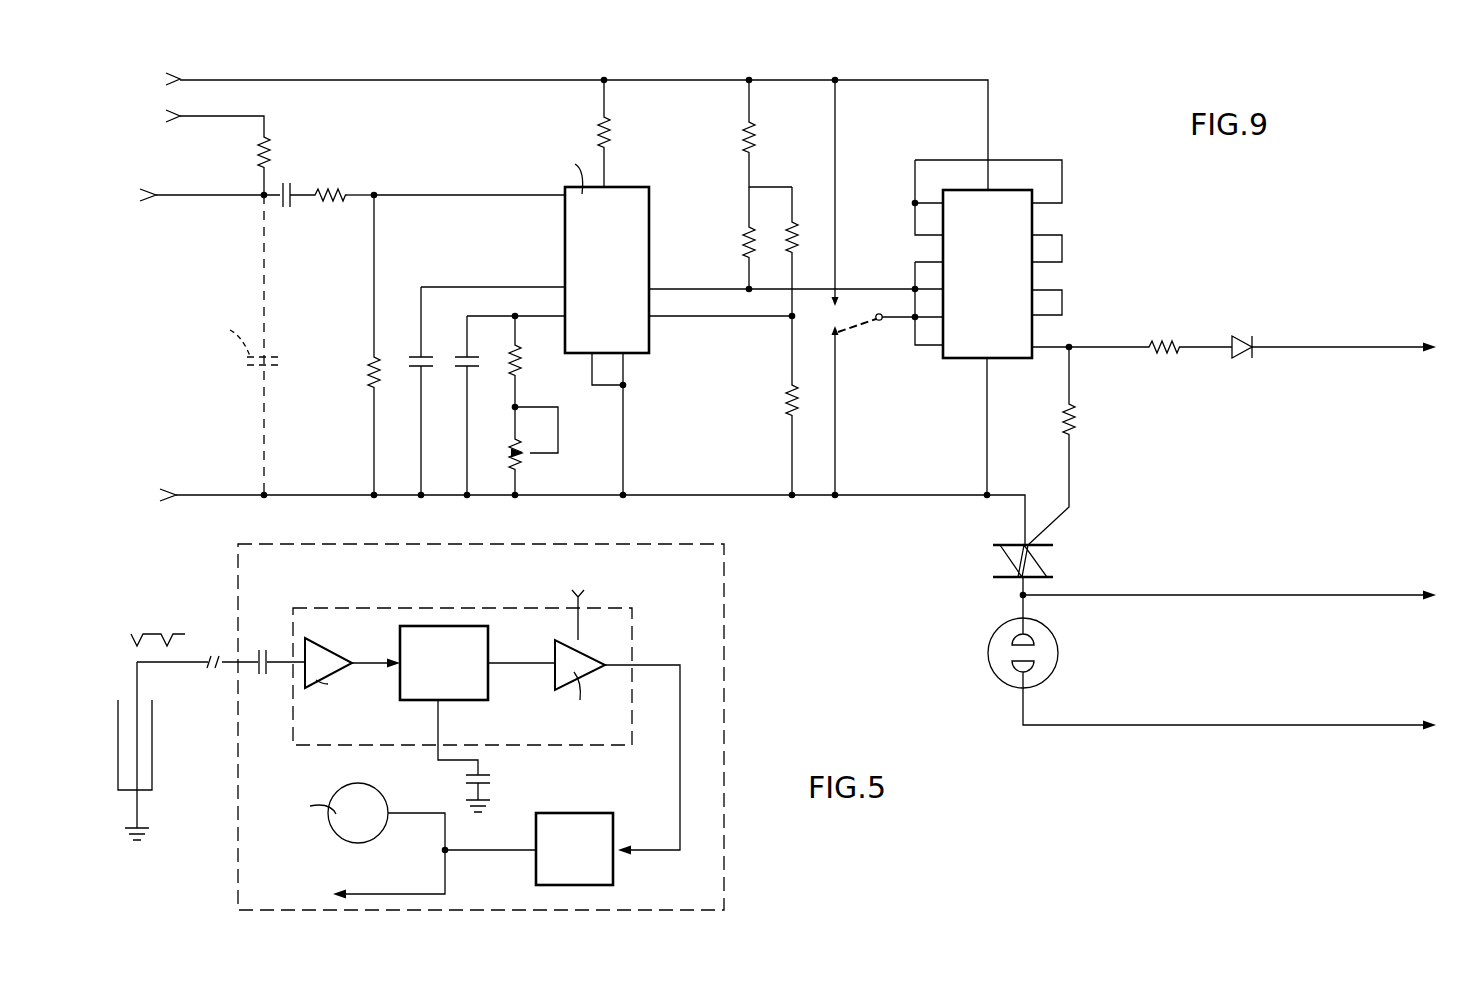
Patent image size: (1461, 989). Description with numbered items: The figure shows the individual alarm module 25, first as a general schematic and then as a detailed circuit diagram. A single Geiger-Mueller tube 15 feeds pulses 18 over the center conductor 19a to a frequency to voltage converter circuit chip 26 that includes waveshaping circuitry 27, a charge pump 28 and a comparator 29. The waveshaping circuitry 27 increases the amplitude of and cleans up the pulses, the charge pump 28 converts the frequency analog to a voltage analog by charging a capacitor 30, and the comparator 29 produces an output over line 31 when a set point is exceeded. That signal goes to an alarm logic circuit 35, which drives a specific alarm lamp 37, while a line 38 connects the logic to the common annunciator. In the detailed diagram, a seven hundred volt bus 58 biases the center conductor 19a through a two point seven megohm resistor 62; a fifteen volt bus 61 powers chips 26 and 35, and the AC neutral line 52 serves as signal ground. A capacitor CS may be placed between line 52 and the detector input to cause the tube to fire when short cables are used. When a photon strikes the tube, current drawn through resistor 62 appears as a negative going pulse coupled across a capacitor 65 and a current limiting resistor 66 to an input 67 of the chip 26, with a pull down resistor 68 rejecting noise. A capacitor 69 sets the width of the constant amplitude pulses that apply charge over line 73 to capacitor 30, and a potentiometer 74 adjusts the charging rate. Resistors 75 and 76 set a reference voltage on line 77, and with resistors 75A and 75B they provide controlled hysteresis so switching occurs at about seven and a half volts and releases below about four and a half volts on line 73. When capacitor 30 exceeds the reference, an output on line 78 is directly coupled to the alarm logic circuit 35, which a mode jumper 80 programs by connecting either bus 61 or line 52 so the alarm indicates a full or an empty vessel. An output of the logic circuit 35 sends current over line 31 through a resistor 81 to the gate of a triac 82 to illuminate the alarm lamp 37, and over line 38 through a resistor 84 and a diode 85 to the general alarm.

In FIG. 5, the Geiger-Mueller tube 15 is at (152, 724).
In FIG. 5, the pulses 18 is at (150, 632).
In FIG. 9, the center conductor 19a is at (196, 195).
In FIG. 5, the center conductor 19a is at (194, 663).
In FIG. 9, the alarm module 25 is at (1128, 274).
In FIG. 5, the alarm module 25 is at (730, 684).
In FIG. 9, the frequency to voltage converter circuit chip 26 is at (509, 288).
In FIG. 5, the frequency to voltage converter circuit chip 26 is at (640, 639).
In FIG. 5, the waveshaping circuitry 27 is at (326, 648).
In FIG. 5, the charge pump 28 is at (486, 637).
In FIG. 5, the comparator 29 is at (586, 656).
In FIG. 9, the capacitor 30 is at (470, 370).
In FIG. 5, the capacitor 30 is at (490, 772).
In FIG. 9, the line 31 is at (1046, 350).
In FIG. 5, the line 31 is at (680, 731).
In FIG. 9, the alarm logic circuit 35 is at (1034, 215).
In FIG. 5, the alarm logic circuit 35 is at (590, 812).
In FIG. 9, the alarm lamp 37 is at (990, 646).
In FIG. 5, the alarm lamp 37 is at (376, 802).
In FIG. 9, the line 38 is at (1288, 346).
In FIG. 5, the line 38 is at (446, 894).
In FIG. 9, the AC neutral line 52 is at (197, 494).
In FIG. 9, the bus 58 is at (234, 116).
In FIG. 9, the bus 61 is at (440, 78).
In FIG. 9, the resistor 62 is at (258, 151).
In FIG. 9, the capacitor 65 is at (292, 183).
In FIG. 9, the current limiting resistor 66 is at (346, 199).
In FIG. 9, the input 67 is at (445, 197).
In FIG. 9, the resistor 68 is at (366, 364).
In FIG. 9, the capacitor 69 is at (416, 355).
In FIG. 9, the line 73 is at (494, 289).
In FIG. 9, the potentiometer 74 is at (502, 455).
In FIG. 9, the resistor 75 is at (798, 213).
In FIG. 9, the resistor 75A is at (742, 119).
In FIG. 9, the resistor 75B is at (738, 224).
In FIG. 9, the resistor 76 is at (782, 402).
In FIG. 9, the line 77 is at (672, 318).
In FIG. 9, the line 78 is at (676, 288).
In FIG. 9, the mode jumper 80 is at (852, 327).
In FIG. 9, the resistor 81 is at (1076, 406).
In FIG. 9, the triac 82 is at (1050, 542).
In FIG. 9, the resistor 84 is at (1164, 344).
In FIG. 9, the diode 85 is at (1236, 359).
In FIG. 9, the capacitor CS is at (242, 345).